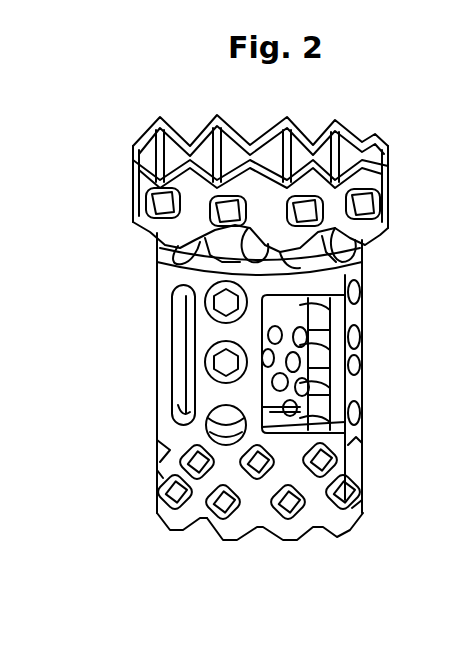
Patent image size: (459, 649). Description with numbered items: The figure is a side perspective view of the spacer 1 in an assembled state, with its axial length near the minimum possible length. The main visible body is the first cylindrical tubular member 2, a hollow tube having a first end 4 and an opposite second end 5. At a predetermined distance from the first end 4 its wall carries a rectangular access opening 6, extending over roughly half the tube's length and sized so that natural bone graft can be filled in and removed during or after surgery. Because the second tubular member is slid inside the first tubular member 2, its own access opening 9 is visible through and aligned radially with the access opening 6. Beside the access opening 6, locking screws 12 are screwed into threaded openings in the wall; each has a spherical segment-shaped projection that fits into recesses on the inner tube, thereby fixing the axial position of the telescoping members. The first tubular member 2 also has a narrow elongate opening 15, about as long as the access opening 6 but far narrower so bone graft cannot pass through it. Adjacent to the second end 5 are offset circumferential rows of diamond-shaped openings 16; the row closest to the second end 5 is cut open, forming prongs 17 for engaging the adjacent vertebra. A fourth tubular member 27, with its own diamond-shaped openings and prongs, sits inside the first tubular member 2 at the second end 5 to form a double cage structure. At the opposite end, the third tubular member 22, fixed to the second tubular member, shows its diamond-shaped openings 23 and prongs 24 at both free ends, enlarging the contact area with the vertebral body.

The spacer 1 is at (114, 144).
The first cylindrical tubular member 2 is at (366, 343).
The first end 4 is at (160, 244).
The second end 5 is at (178, 532).
The access opening 6 is at (340, 390).
The access opening 9 is at (360, 314).
The locking screw 12 is at (205, 318).
The elongate opening 15 is at (180, 372).
The diamond-shaped openings 16 is at (180, 458).
The prongs 17 is at (290, 537).
The third tubular member 22 is at (392, 167).
The diamond-shaped openings 23 is at (160, 207).
The prongs 24 is at (212, 124).
The fourth tubular member 27 is at (236, 504).